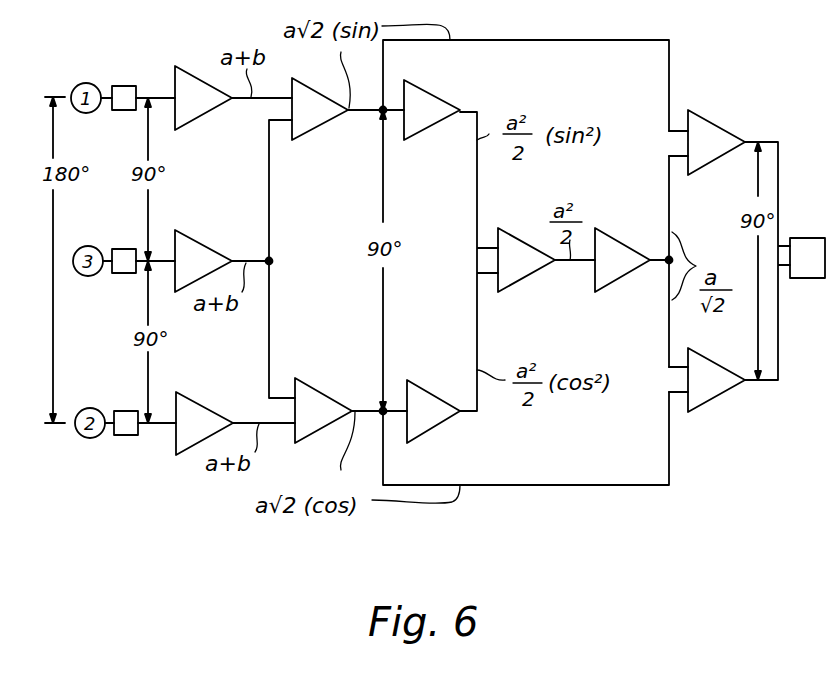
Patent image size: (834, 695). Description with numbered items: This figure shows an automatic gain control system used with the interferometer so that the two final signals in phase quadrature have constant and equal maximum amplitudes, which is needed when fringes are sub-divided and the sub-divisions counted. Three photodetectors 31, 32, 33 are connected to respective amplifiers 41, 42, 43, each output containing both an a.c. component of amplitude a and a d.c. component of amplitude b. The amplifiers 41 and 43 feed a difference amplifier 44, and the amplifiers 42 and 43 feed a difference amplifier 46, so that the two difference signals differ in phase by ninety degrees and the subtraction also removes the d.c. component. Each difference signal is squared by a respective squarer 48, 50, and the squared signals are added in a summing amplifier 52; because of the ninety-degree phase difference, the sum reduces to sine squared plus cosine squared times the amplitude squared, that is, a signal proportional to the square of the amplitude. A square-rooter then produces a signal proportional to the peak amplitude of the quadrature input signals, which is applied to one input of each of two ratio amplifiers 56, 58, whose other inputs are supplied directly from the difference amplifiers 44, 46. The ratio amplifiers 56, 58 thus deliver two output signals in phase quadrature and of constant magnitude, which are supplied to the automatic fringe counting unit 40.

The photodetector 31 is at (126, 86).
The photodetector 32 is at (124, 411).
The photodetector 33 is at (124, 249).
The automatic fringe counting unit 40 is at (810, 238).
The amplifier 41 is at (185, 69).
The amplifier 42 is at (189, 394).
The amplifier 43 is at (191, 233).
The difference amplifier 44 is at (311, 134).
The difference amplifier 46 is at (315, 382).
The squarer 48 is at (438, 97).
The squarer 50 is at (436, 370).
The summing amplifier 52 is at (512, 221).
The ratio amplifier 56 is at (719, 103).
The ratio amplifier 58 is at (716, 400).